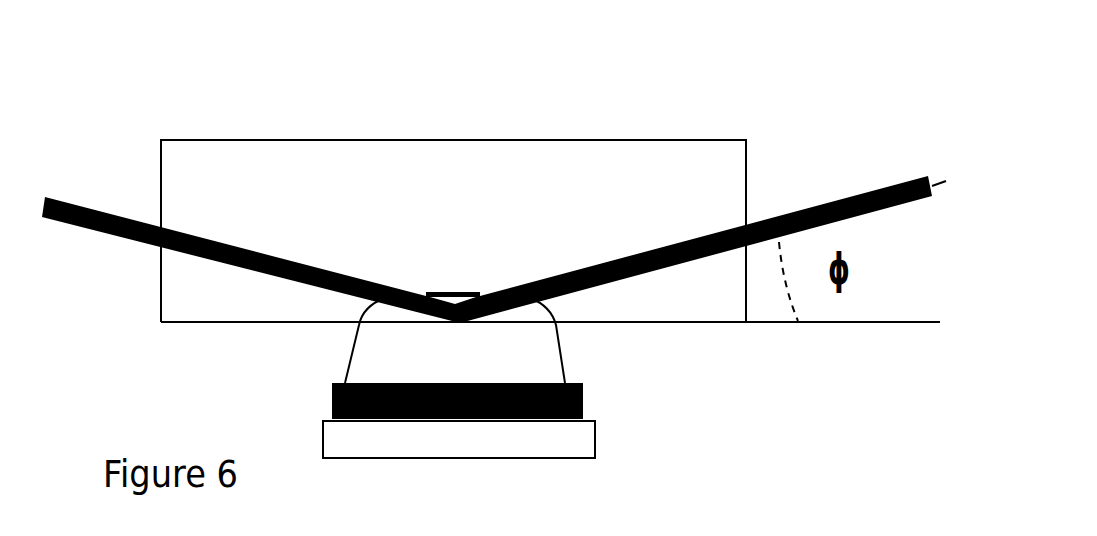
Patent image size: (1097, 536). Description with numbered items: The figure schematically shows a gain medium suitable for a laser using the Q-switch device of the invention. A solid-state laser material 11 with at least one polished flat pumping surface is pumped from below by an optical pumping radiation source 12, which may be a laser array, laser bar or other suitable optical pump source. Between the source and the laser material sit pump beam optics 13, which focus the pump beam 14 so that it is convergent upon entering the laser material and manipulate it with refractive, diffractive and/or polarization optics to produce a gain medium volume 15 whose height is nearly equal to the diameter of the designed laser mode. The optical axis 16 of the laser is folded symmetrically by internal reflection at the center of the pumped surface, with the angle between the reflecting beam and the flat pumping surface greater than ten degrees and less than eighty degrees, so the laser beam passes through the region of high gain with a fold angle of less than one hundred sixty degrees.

The solid-state laser material 11 is at (218, 145).
The optical pumping radiation source 12 is at (310, 438).
The pump beam optics 13 is at (600, 407).
The pump beam 14 is at (575, 341).
The gain medium volume 15 is at (457, 281).
The optical axis 16 is at (822, 192).